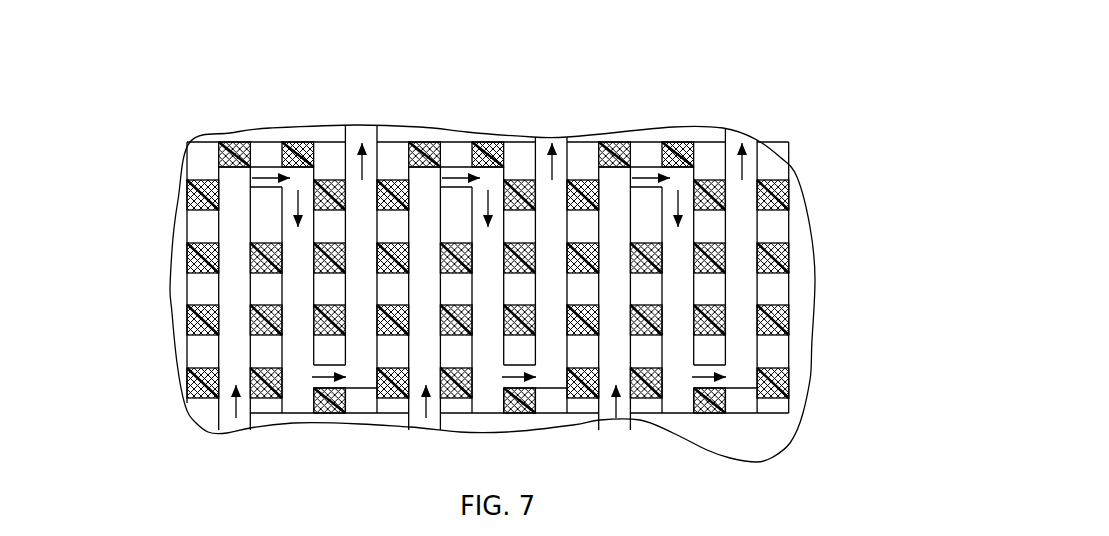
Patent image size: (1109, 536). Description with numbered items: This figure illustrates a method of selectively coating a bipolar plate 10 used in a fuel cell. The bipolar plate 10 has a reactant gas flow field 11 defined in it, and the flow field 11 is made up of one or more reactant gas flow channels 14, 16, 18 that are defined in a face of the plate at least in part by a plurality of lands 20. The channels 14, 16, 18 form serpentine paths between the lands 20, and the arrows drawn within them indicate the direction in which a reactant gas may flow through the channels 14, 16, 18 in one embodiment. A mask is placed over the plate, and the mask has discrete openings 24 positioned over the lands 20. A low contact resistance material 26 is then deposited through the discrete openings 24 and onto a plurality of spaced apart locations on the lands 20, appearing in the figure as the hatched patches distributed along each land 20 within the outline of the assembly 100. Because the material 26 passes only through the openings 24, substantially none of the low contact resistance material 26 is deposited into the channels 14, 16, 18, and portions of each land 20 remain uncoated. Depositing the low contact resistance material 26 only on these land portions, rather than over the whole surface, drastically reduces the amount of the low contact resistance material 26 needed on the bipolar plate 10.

The fuel cell system 100 is at (527, 246).
The bipolar plate 10 is at (814, 111).
The reactant gas flow field 11 is at (362, 105).
The reactant gas flow channel 14 is at (219, 433).
The reactant gas flow channel 16 is at (412, 412).
The reactant gas flow channel 18 is at (612, 412).
The land 20 is at (203, 292).
The discrete opening 24 is at (782, 188).
The low contact resistance material 26 is at (790, 187).